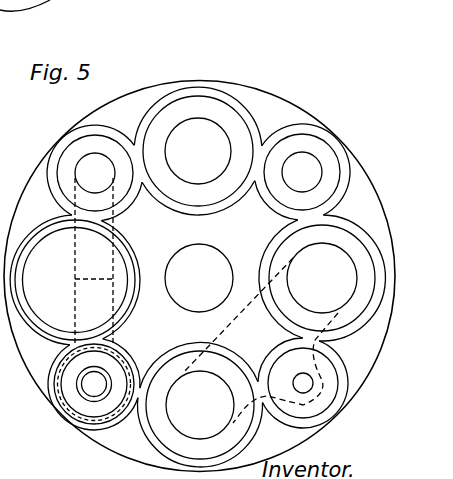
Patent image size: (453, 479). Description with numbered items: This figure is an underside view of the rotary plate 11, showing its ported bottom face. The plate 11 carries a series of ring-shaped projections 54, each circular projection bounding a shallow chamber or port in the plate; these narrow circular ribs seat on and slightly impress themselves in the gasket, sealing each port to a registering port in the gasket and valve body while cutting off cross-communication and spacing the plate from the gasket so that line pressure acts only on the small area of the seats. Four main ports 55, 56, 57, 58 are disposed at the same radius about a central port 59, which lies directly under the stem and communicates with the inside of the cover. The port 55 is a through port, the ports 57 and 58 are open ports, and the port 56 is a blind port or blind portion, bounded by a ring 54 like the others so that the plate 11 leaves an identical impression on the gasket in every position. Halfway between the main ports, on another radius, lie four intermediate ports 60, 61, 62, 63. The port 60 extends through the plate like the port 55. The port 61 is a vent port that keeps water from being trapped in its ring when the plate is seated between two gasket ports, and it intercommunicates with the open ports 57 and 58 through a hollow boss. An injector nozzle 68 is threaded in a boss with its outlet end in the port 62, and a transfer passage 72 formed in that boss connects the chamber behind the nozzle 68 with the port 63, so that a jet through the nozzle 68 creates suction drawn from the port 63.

The rotary plate 11 is at (280, 100).
The ring-shaped projections 54 is at (227, 97).
The through port 55 is at (198, 151).
The blind port 56 is at (75, 280).
The open port 57 is at (200, 405).
The open port 58 is at (322, 278).
The central port 59 is at (215, 258).
The intermediate port 60 is at (310, 167).
The vent port 61 is at (304, 383).
The intermediate port 62 is at (82, 403).
The intermediate port 63 is at (88, 165).
The injector nozzle 68 is at (103, 373).
The transfer passage 72 is at (115, 263).